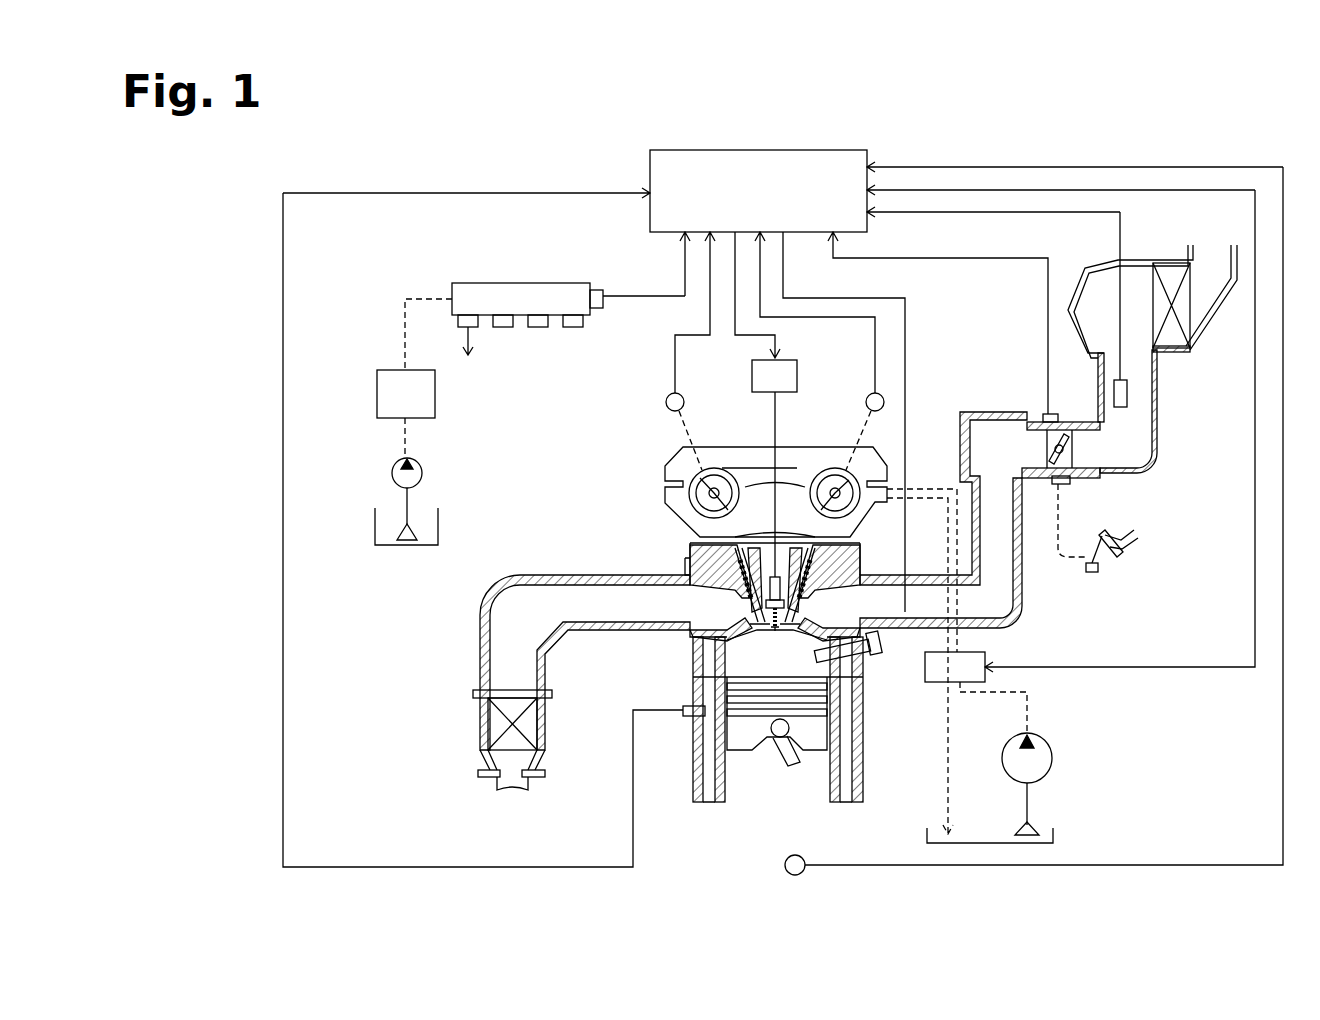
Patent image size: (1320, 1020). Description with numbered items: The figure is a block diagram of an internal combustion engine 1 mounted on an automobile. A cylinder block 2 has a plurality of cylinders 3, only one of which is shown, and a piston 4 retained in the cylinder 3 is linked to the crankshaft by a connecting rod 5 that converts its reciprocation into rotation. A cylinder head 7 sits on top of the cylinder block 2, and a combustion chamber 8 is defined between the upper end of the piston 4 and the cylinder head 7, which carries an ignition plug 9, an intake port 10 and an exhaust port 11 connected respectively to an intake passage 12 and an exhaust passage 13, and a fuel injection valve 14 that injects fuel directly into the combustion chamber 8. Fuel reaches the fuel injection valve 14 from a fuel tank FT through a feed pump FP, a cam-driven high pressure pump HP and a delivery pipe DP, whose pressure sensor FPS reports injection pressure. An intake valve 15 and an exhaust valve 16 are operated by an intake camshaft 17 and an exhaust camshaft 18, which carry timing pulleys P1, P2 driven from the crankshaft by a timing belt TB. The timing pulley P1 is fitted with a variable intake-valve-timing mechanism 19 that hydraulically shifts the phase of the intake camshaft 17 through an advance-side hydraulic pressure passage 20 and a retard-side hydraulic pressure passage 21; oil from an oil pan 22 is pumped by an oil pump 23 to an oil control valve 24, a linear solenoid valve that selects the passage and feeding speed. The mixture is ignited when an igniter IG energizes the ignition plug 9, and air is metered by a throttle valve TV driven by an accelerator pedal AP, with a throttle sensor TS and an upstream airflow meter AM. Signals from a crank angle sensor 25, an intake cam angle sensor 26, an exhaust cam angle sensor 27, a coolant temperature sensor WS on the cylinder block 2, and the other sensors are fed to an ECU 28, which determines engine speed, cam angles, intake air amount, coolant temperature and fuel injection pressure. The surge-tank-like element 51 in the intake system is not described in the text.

The internal combustion engine 1 is at (879, 767).
The cylinder block 2 is at (693, 779).
The cylinder 3 is at (727, 803).
The piston 4 is at (766, 726).
The connecting rod 5 is at (793, 761).
The cylinder head 7 is at (690, 548).
The combustion chamber 8 is at (793, 669).
The ignition plug 9 is at (779, 575).
The intake port 10 is at (852, 592).
The exhaust port 11 is at (706, 590).
The intake passage 12 is at (1020, 600).
The exhaust passage 13 is at (603, 622).
The fuel injection valve 14 is at (880, 657).
The intake valve 15 is at (812, 600).
The exhaust valve 16 is at (692, 640).
The intake camshaft 17 is at (850, 512).
The exhaust camshaft 18 is at (775, 505).
The variable intake-valve-timing mechanism 19 is at (837, 453).
The advance-side hydraulic pressure passage 20 is at (962, 638).
The retard-side hydraulic pressure passage 21 is at (947, 558).
The oil pan 22 is at (1053, 831).
The oil pump 23 is at (1052, 758).
The oil control valve 24 is at (932, 686).
The crank angle sensor 25 is at (785, 866).
The intake cam angle sensor 26 is at (867, 397).
The exhaust cam angle sensor 27 is at (666, 405).
The ECU 28 is at (650, 232).
The surge tank 51 is at (968, 453).
The delivery pipe DP is at (498, 283).
The pressure sensor FPS is at (603, 300).
The high pressure pump HP is at (377, 396).
The feed pump FP is at (392, 473).
The fuel tank FT is at (375, 537).
The igniter IG is at (799, 360).
The timing pulley P1 is at (850, 467).
The timing pulley P2 is at (728, 472).
The timing belt TB is at (793, 470).
The throttle sensor TS is at (1044, 413).
The throttle valve TV is at (1066, 447).
The airflow meter AM is at (1127, 393).
The accelerator pedal AP is at (1108, 534).
The coolant temperature sensor WS is at (683, 713).